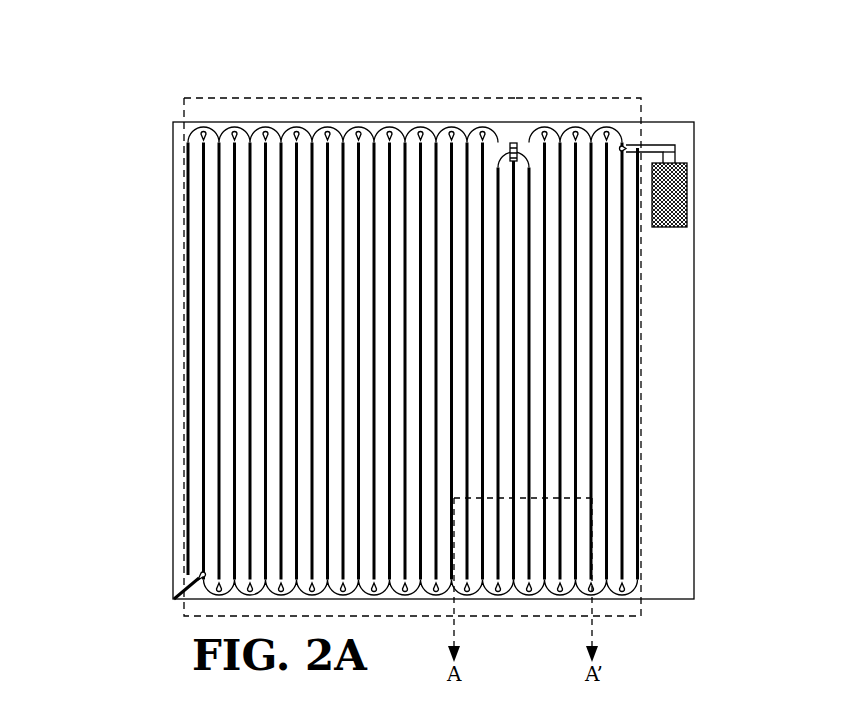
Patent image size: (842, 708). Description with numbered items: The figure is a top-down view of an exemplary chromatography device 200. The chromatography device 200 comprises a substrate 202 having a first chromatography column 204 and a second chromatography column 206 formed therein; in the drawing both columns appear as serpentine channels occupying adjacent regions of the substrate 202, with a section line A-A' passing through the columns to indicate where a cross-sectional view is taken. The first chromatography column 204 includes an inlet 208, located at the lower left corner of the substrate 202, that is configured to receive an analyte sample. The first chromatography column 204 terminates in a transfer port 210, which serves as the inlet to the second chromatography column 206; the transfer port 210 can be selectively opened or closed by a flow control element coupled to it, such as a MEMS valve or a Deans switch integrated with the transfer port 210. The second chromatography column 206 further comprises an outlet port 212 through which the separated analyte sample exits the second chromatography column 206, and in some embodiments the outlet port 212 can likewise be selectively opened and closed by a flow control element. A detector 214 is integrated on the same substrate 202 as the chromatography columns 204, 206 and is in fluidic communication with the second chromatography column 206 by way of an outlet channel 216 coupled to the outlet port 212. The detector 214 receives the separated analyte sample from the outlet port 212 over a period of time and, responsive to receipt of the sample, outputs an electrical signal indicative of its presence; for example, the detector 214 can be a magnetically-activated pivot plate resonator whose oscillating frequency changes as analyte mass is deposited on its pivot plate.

The chromatography device 200 is at (750, 92).
The substrate 202 is at (695, 328).
The first chromatography column 204 is at (298, 99).
The second chromatography column 206 is at (577, 99).
The inlet 208 is at (183, 601).
The transfer port 210 is at (512, 143).
The outlet port 212 is at (628, 146).
The detector 214 is at (687, 193).
The outlet channel 216 is at (676, 147).